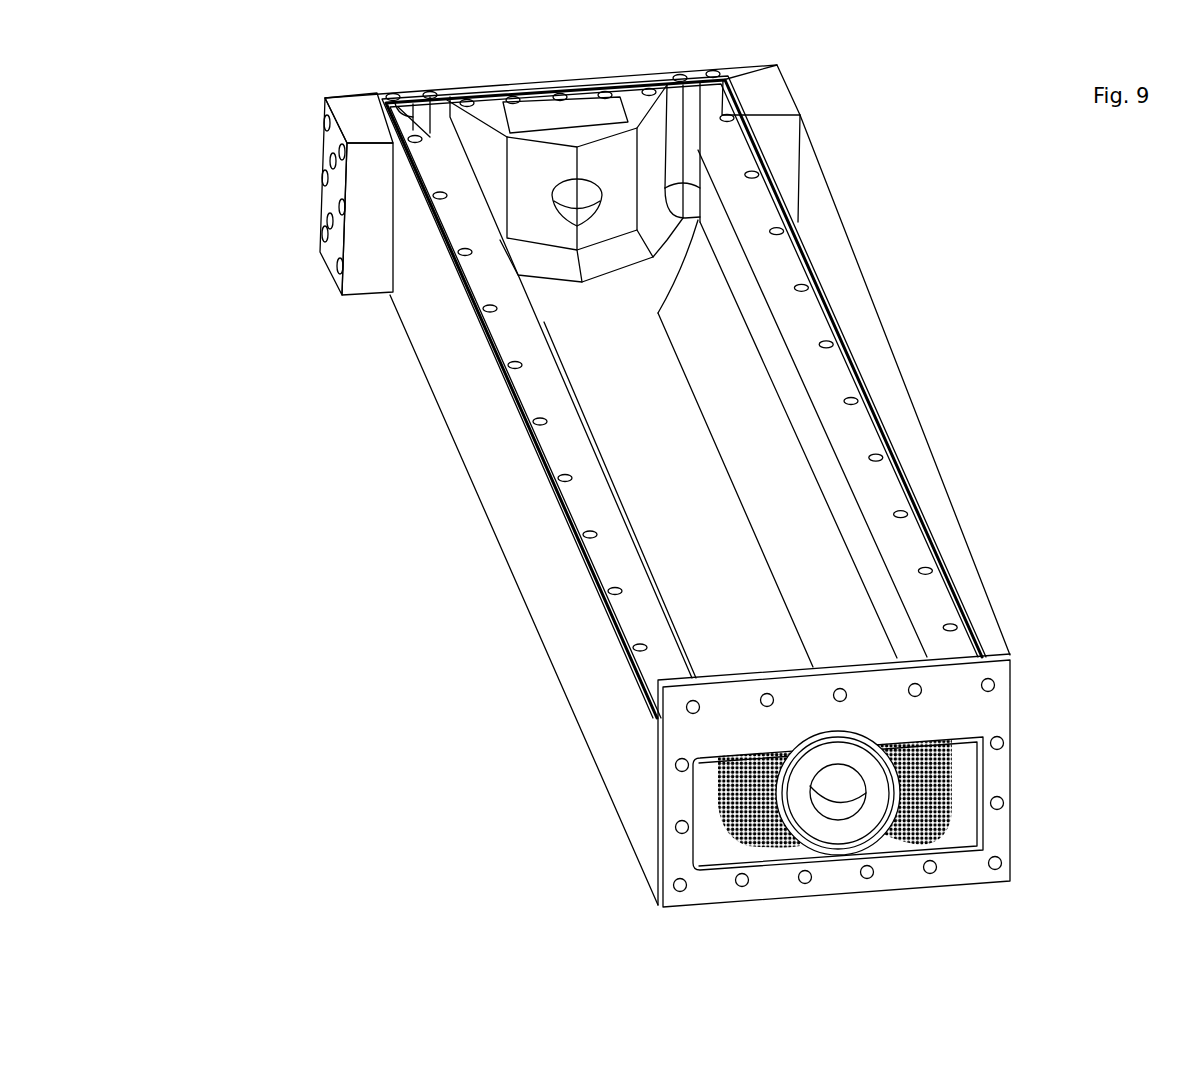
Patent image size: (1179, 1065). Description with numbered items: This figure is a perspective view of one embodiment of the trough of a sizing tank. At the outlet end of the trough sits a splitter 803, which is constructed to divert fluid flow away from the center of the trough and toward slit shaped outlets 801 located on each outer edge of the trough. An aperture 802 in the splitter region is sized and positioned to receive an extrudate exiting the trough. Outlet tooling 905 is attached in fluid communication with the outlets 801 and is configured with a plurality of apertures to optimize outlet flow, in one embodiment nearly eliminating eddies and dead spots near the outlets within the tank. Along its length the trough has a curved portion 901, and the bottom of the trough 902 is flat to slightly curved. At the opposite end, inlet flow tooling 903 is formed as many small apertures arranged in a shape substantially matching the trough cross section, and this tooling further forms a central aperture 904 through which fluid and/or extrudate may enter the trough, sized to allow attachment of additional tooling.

The slit shaped outlets 801 is at (418, 118).
The aperture 802 is at (577, 192).
The splitter 803 is at (505, 150).
The curved portion 901 is at (758, 408).
The bottom of the trough 902 is at (638, 428).
The inlet flow tooling 903 is at (720, 792).
The central aperture 904 is at (842, 792).
The outlet tooling 905 is at (338, 197).